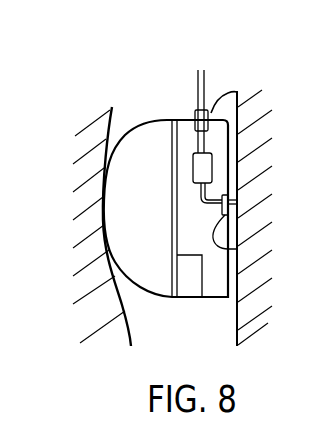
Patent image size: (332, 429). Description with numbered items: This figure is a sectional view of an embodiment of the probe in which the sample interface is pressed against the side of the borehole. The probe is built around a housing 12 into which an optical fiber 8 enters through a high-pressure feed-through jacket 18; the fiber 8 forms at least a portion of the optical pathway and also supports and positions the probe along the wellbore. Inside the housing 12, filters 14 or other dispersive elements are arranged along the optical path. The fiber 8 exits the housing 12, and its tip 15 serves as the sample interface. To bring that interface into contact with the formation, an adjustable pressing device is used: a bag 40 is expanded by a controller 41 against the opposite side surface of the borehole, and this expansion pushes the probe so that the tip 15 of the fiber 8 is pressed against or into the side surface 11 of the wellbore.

The optical fiber 8 is at (197, 80).
The side surface of the wellbore 11 is at (122, 306).
The housing 12 is at (224, 80).
The filters 14 is at (212, 160).
The tip of the fiber 15 is at (237, 202).
The high-pressure feed-through jacket 18 is at (237, 92).
The bag 40 is at (141, 138).
The controller 41 is at (188, 298).